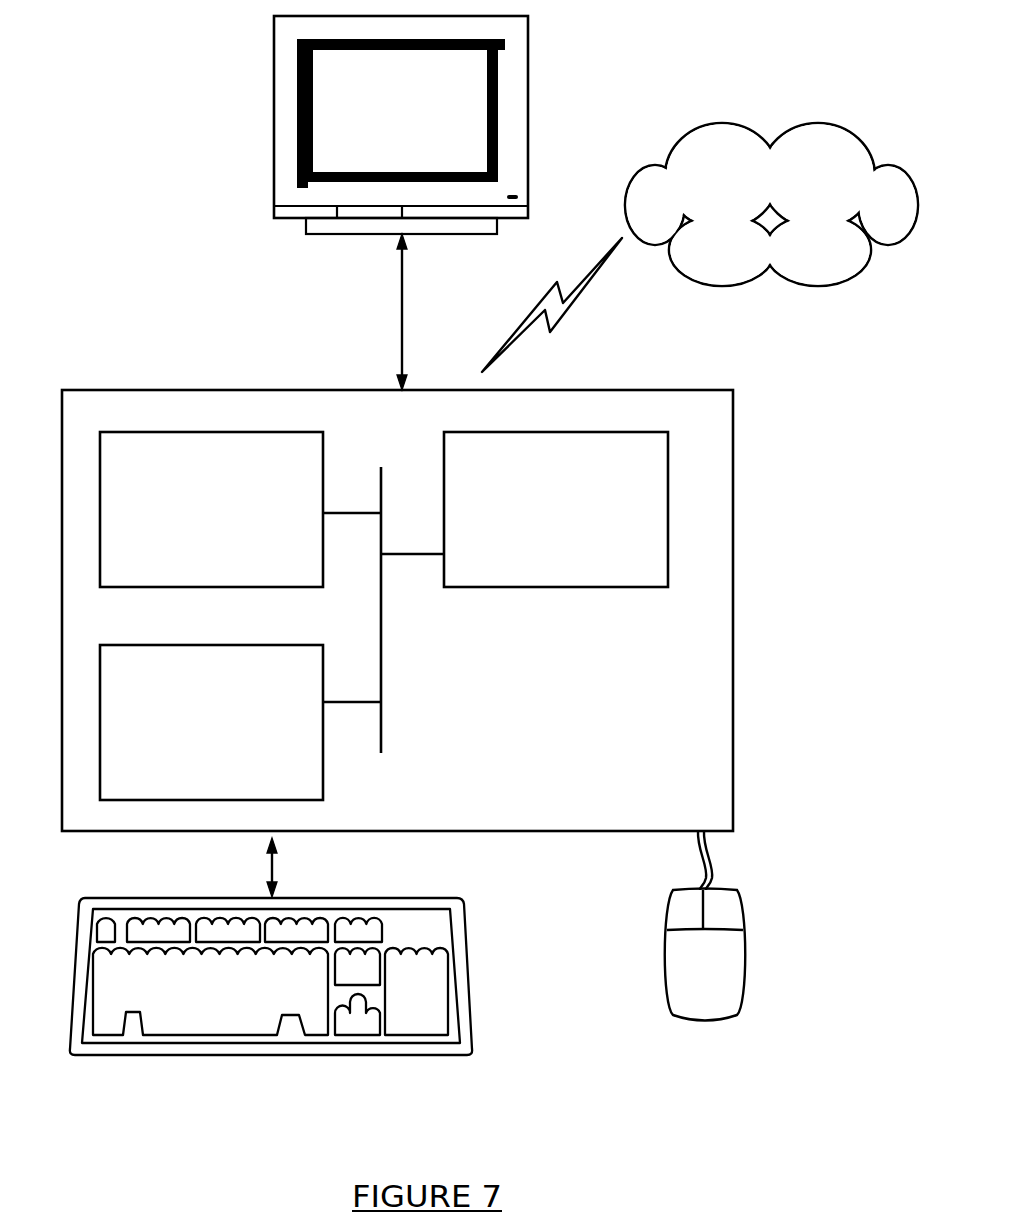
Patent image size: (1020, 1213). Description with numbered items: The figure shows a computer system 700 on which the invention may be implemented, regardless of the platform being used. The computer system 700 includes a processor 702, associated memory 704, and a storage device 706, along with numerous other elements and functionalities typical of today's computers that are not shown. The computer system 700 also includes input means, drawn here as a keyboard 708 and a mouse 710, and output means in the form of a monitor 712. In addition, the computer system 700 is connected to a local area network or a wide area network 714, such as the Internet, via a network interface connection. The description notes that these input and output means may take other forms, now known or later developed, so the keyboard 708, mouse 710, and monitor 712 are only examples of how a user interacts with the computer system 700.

The computer system 700 is at (103, 218).
The processor 702 is at (573, 519).
The associated memory 704 is at (233, 519).
The storage device 706 is at (229, 734).
The keyboard 708 is at (231, 1002).
The mouse 710 is at (726, 974).
The monitor 712 is at (419, 126).
The wide area network 714 is at (796, 232).